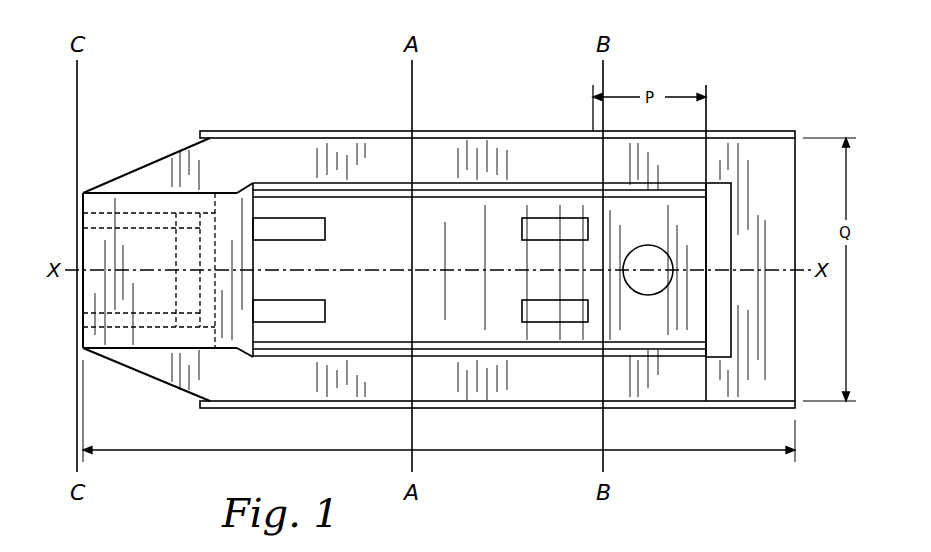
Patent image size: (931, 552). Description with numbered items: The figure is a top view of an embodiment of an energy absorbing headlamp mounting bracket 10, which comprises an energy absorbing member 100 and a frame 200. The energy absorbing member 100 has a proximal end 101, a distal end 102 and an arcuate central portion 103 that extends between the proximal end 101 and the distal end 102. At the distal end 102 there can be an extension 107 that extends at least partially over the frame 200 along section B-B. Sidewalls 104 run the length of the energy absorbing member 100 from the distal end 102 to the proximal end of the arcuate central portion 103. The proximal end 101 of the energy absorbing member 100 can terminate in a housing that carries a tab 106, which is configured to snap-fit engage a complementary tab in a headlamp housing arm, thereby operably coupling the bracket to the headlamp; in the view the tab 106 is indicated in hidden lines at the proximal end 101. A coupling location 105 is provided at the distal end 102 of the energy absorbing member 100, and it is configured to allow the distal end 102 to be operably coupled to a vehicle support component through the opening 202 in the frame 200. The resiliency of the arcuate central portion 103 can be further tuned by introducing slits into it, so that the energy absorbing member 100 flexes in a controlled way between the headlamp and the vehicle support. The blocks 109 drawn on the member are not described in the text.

The energy absorbing headlamp mounting bracket 10 is at (80, 198).
The energy absorbing member 100 is at (467, 313).
The proximal end 101 is at (92, 263).
The distal end 102 is at (696, 318).
The arcuate central portion 103 is at (398, 292).
The sidewalls 104 is at (388, 195).
The coupling location 105 is at (652, 282).
The tab 106 is at (190, 285).
The extension 107 is at (658, 380).
The mounting blocks 109 is at (295, 225).
The frame 200 is at (430, 162).
The opening 202 is at (717, 217).